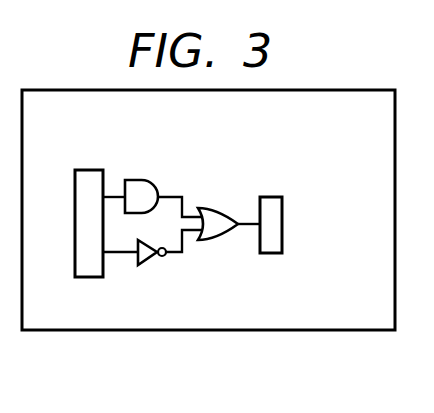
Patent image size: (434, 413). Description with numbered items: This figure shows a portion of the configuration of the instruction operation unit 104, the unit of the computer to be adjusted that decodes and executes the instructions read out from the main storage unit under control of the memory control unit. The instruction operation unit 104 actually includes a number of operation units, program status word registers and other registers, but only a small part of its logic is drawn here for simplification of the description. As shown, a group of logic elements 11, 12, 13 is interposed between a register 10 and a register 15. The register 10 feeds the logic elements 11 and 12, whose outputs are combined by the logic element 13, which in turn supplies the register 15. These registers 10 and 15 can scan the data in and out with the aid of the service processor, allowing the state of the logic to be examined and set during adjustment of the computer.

The register 10 is at (75, 255).
The logic element 11 is at (143, 181).
The logic element 12 is at (163, 257).
The logic element 13 is at (212, 208).
The register 15 is at (283, 226).
The instruction operation unit 104 is at (327, 331).